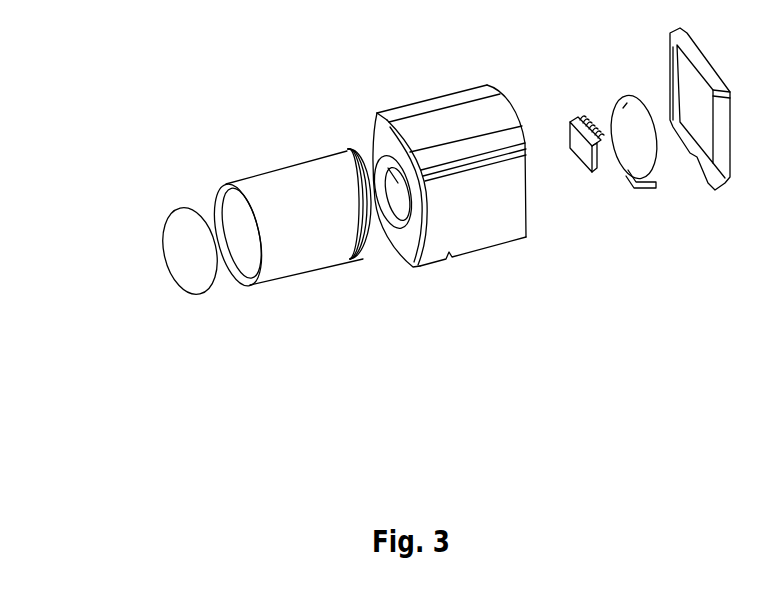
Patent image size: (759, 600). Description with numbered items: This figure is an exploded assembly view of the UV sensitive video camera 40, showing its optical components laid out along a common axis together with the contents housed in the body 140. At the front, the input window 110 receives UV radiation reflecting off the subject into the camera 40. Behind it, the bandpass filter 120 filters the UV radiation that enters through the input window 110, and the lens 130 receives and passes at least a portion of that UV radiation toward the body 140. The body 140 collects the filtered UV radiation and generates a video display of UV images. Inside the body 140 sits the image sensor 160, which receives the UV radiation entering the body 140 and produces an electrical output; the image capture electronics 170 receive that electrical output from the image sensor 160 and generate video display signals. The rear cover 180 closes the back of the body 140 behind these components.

The camera 40 is at (163, 35).
The input window 110 is at (372, 150).
The bandpass filter 120 is at (183, 247).
The lens 130 is at (313, 229).
The body 140 is at (492, 211).
The image sensor 160 is at (585, 157).
The image capture electronics 170 is at (624, 106).
The rear cover 180 is at (713, 190).